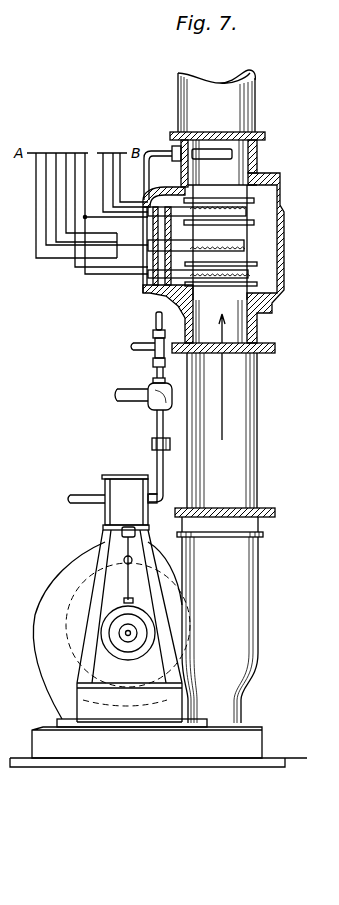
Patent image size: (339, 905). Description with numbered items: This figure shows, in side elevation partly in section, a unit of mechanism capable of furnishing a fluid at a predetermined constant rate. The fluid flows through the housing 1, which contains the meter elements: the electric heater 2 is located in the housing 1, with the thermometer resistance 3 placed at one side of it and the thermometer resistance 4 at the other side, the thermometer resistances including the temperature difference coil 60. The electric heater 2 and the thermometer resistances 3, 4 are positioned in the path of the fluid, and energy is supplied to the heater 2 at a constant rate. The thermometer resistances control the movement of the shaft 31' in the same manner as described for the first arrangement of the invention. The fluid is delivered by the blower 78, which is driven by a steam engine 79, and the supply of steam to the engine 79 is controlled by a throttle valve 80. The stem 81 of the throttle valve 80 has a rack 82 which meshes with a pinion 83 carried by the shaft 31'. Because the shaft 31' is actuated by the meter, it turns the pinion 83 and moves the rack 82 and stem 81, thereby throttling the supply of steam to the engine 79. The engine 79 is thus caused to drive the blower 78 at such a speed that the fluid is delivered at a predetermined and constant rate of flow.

The housing 1 is at (284, 226).
The electric heater 2 is at (246, 244).
The thermometer resistance 3 is at (258, 284).
The thermometer resistance 4 is at (256, 210).
The temperature difference coil 60 is at (234, 155).
The blower 78 is at (46, 664).
The steam engine 79 is at (112, 545).
The throttle valve 80 is at (159, 400).
The stem 81 is at (156, 372).
The rack 82 is at (154, 333).
The shaft 31' is at (122, 348).
The pinion 83 is at (153, 361).